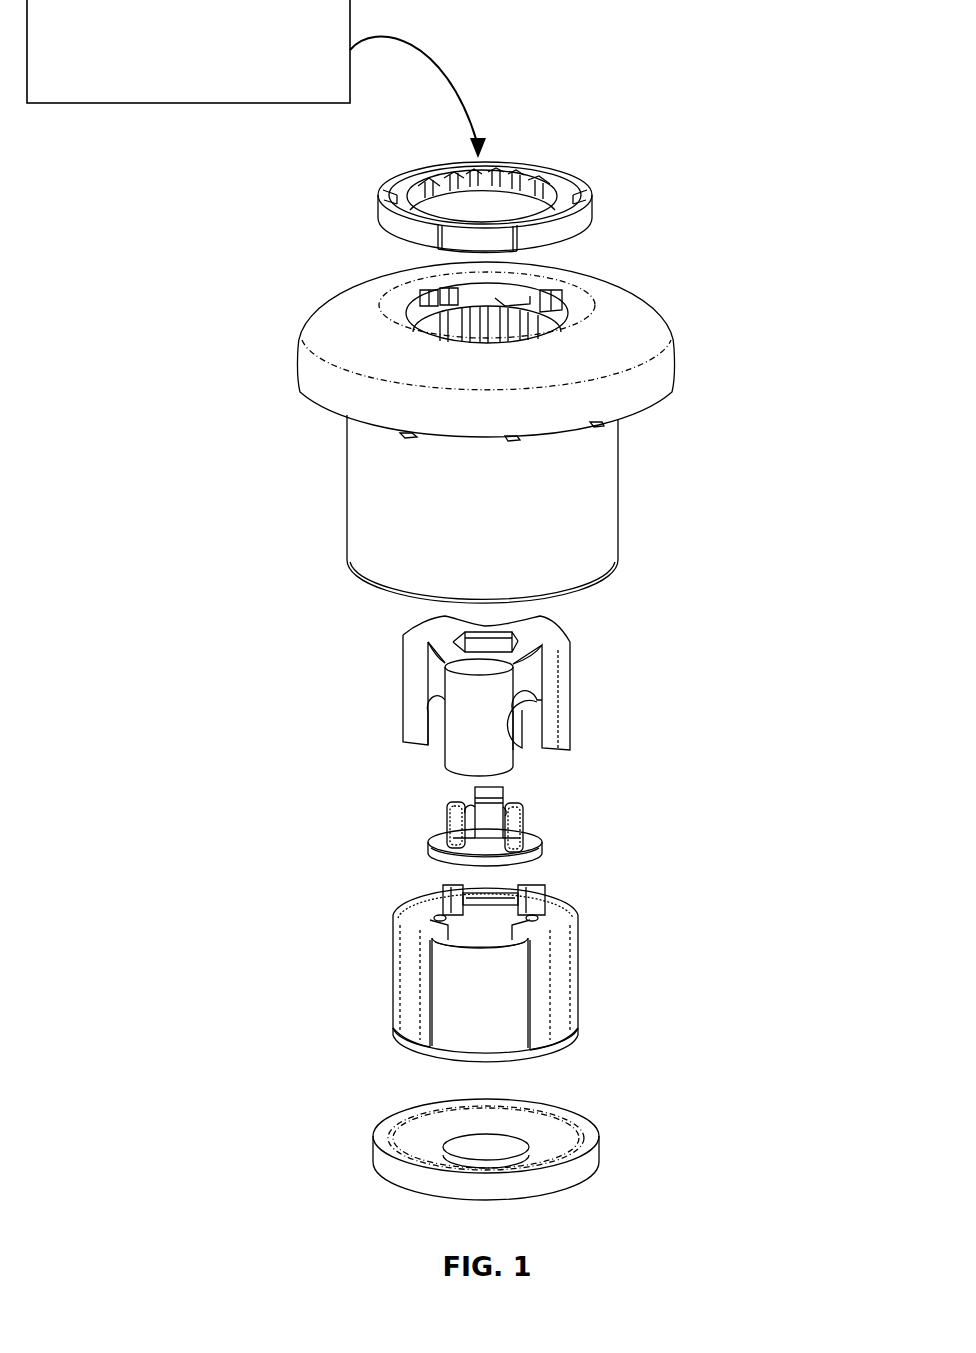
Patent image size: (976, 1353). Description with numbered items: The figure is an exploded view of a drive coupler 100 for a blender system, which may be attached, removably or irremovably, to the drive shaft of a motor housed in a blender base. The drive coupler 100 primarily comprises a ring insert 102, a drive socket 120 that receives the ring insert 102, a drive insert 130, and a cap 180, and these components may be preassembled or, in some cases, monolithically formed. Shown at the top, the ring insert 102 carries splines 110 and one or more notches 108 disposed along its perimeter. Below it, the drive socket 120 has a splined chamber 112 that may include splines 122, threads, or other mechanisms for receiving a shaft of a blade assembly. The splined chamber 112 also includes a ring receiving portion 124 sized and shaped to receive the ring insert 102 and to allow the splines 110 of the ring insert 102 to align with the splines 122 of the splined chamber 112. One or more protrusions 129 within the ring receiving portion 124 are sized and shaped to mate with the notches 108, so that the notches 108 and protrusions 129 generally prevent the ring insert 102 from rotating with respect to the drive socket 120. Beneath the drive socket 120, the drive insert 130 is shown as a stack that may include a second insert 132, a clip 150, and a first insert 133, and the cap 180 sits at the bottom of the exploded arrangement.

The drive coupler 100 is at (668, 130).
The ring insert 102 is at (345, 185).
The notches 108 is at (590, 197).
The splines 110 is at (497, 172).
The splined chamber 112 is at (474, 318).
The drive socket 120 is at (678, 350).
The splines 122 is at (432, 322).
The ring receiving portion 124 is at (512, 305).
The protrusions 129 is at (550, 302).
The drive insert 130 is at (653, 620).
The second insert 132 is at (414, 690).
The first insert 133 is at (401, 980).
The clip 150 is at (441, 838).
The cap 180 is at (416, 1133).